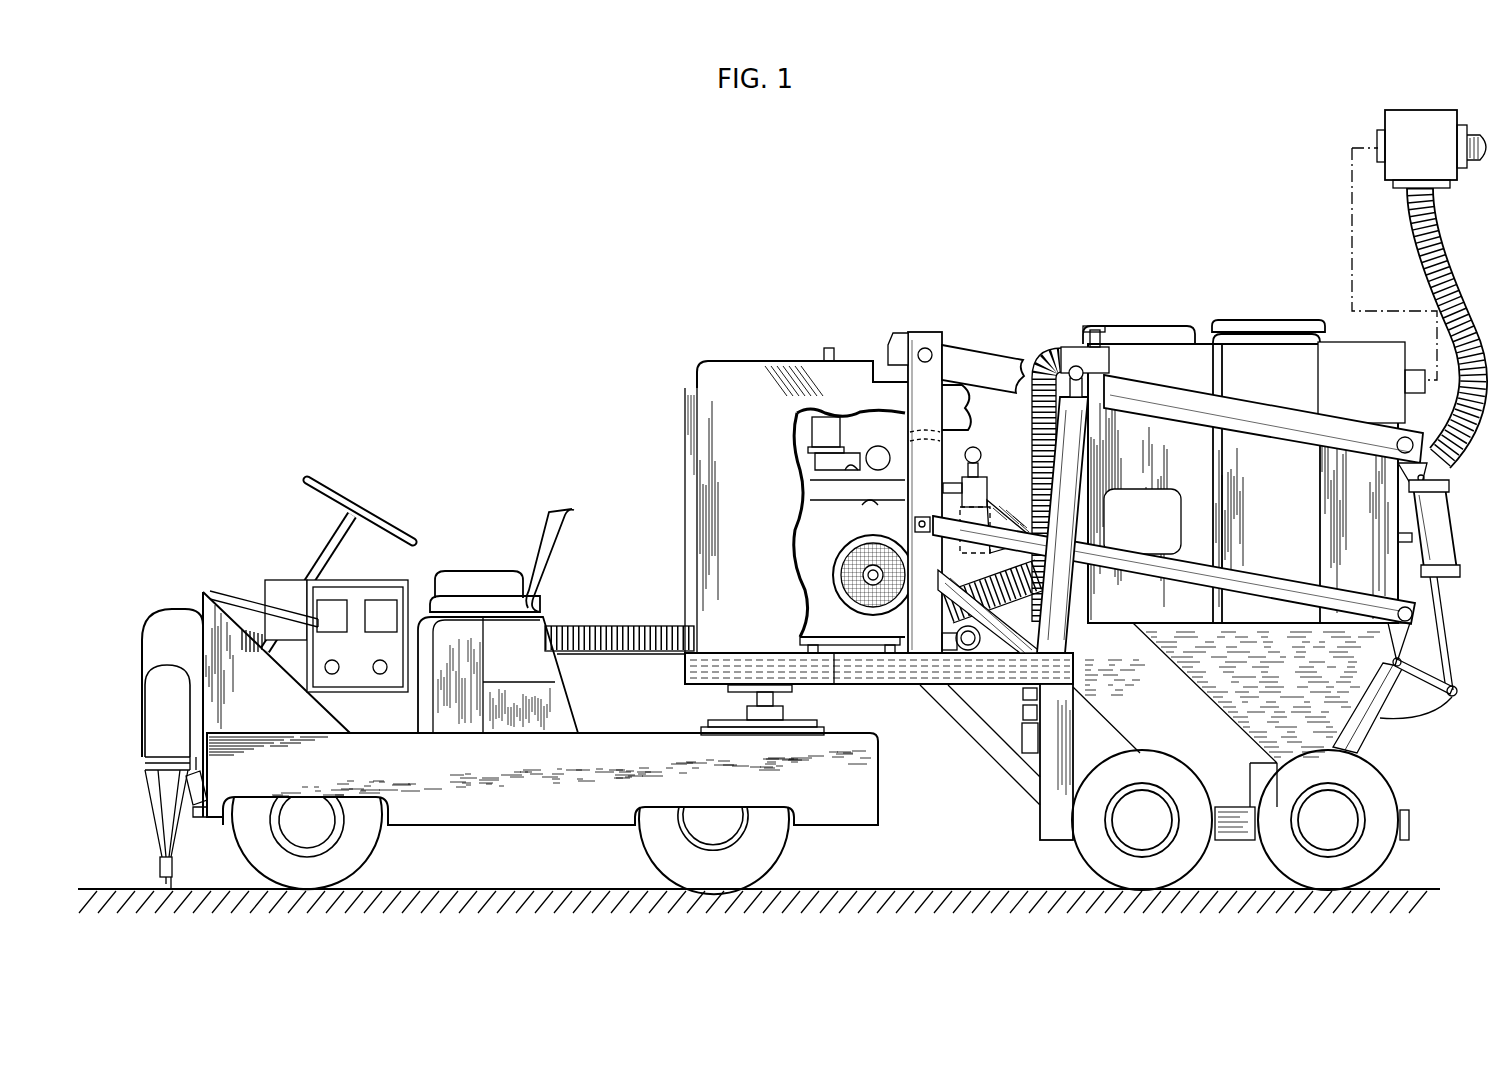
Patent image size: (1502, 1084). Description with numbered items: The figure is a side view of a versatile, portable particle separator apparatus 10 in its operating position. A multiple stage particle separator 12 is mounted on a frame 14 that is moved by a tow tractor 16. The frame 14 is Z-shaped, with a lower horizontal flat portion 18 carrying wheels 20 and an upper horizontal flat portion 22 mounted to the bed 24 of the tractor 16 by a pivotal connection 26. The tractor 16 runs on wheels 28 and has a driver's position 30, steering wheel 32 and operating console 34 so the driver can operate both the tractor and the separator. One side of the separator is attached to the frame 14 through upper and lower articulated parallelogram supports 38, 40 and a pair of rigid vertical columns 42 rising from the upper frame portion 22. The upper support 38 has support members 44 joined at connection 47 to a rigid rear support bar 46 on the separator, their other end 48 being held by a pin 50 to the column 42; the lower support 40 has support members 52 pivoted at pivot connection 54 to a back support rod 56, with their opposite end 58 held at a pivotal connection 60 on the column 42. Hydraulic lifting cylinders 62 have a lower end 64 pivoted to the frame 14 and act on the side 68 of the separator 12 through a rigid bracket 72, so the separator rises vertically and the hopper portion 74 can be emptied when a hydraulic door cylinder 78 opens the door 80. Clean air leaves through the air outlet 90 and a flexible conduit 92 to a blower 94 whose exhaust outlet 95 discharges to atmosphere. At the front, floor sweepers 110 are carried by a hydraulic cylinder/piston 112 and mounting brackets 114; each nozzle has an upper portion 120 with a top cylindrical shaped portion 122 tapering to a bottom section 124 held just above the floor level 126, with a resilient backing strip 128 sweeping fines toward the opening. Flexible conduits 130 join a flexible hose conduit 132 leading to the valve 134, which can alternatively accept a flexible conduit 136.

The versatile, portable particle separator apparatus 10 is at (650, 343).
The multiple stage particle separator 12 is at (1243, 342).
The frame 14 is at (1054, 664).
The tow tractor 16 is at (875, 771).
The lower horizontal flat portion 18 is at (1038, 822).
The wheels 20 is at (1280, 840).
The upper horizontal flat portion 22 is at (865, 672).
The bed 24 is at (625, 733).
The pivotal connection 26 is at (777, 697).
The wheels 28 is at (365, 845).
The driver's position 30 is at (482, 571).
The steering wheel 32 is at (305, 482).
The operating console 34 is at (362, 595).
The upper articulated parallelogram support 38 is at (1246, 390).
The lower articulated parallelogram support 40 is at (1258, 568).
The rigid vertical columns 42 is at (920, 333).
The support members 44 is at (1203, 411).
The rigid rear support bar 46 is at (1404, 441).
The connection 47 is at (1398, 440).
The other end 48 is at (893, 335).
The pin 50 is at (932, 352).
The support members 52 is at (1118, 558).
The pivot connection 54 is at (1390, 602).
The back support rod 56 is at (1393, 632).
The opposite end 58 is at (922, 523).
The pivotal connection 60 is at (972, 517).
The hydraulic lifting cylinders 62 is at (1082, 435).
The lower end 64 is at (1023, 698).
The side 68 is at (1082, 465).
The rigid bracket 72 is at (1100, 352).
The hopper portion 74 is at (1243, 703).
The hydraulic door cylinder 78 is at (1431, 500).
The door 80 is at (1370, 727).
The air outlet 90 is at (1068, 352).
The flexible conduit 92 is at (973, 407).
The blower 94 is at (821, 533).
The blower exhaust outlet 95 is at (829, 342).
The floor sweepers 110 is at (118, 648).
The hydraulic cylinder/piston 112 is at (207, 782).
The mounting brackets 114 is at (144, 758).
The upper portion 120 is at (160, 799).
The top cylindrical shaped portion 122 is at (164, 776).
The bottom section 124 is at (165, 862).
The floor level 126 is at (538, 889).
The resilient backing strip 128 is at (175, 877).
The flexible conduits 130 is at (171, 626).
The flexible hose conduit 132 is at (253, 637).
The valve 134 is at (1417, 122).
The flexible conduit 136 is at (1473, 140).